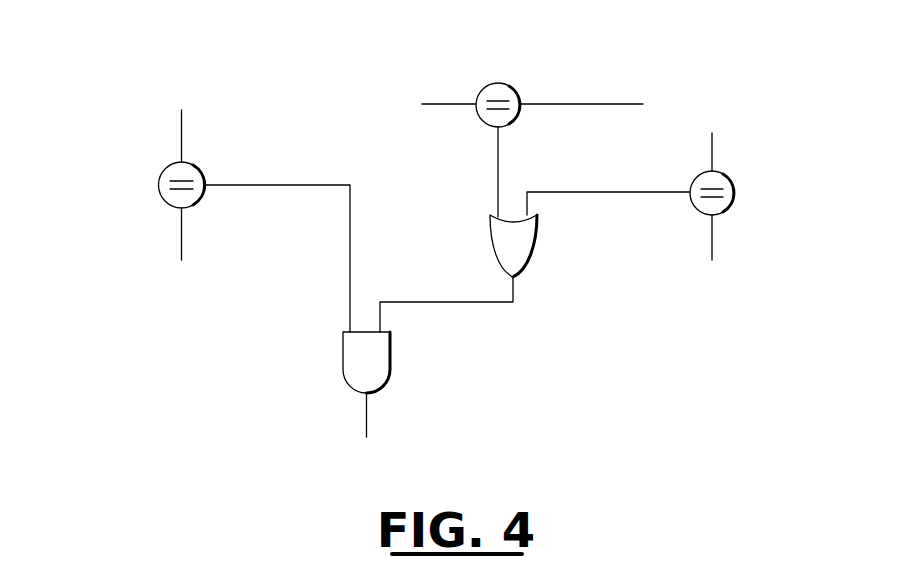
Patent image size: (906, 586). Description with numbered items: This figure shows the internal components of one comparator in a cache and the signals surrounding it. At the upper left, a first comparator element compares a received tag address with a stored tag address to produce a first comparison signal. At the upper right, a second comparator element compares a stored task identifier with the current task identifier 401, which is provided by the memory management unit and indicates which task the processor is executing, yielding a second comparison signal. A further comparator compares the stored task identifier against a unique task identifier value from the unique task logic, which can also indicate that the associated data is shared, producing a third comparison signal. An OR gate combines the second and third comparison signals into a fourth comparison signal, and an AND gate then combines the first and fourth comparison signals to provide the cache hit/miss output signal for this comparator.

The task identifier 401 is at (727, 283).